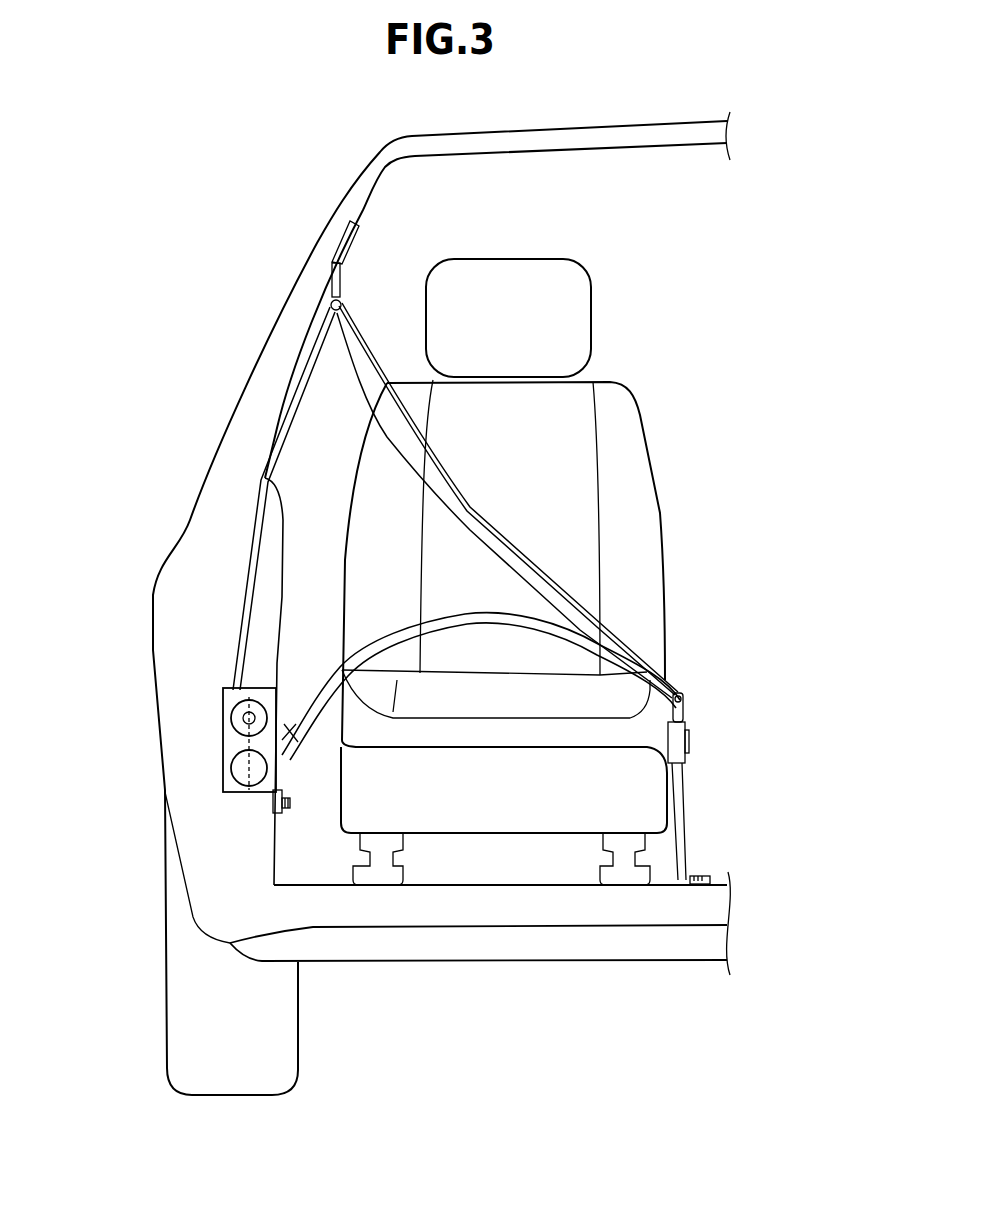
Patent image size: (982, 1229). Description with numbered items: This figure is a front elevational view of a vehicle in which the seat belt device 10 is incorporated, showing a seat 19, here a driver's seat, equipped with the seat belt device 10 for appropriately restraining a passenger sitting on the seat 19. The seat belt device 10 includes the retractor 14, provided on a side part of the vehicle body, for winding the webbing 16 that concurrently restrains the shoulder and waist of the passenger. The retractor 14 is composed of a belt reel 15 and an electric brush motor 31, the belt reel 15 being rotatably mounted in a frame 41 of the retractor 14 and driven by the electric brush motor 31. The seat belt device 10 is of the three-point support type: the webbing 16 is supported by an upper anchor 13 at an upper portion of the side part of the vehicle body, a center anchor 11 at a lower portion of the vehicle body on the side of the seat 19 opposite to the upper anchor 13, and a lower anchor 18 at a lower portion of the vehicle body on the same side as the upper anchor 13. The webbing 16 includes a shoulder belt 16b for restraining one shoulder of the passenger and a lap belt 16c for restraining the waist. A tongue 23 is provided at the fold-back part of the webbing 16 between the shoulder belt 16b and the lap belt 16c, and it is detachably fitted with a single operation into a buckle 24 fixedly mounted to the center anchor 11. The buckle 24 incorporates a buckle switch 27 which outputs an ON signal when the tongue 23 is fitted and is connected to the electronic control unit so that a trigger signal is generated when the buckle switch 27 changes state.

The seat belt device 10 is at (208, 645).
The center anchor 11 is at (682, 793).
The upper anchor 13 is at (333, 283).
The retractor 14 is at (148, 726).
The belt reel 15 is at (230, 722).
The webbing 16 is at (549, 531).
The shoulder belt 16b is at (497, 543).
The lap belt 16c is at (487, 630).
The lower anchor 18 is at (273, 793).
The seat 19 is at (628, 372).
The tongue 23 is at (678, 702).
The buckle 24 is at (678, 735).
The buckle switch 27 is at (689, 737).
The electric brush motor 31 is at (237, 781).
The frame 41 is at (225, 750).